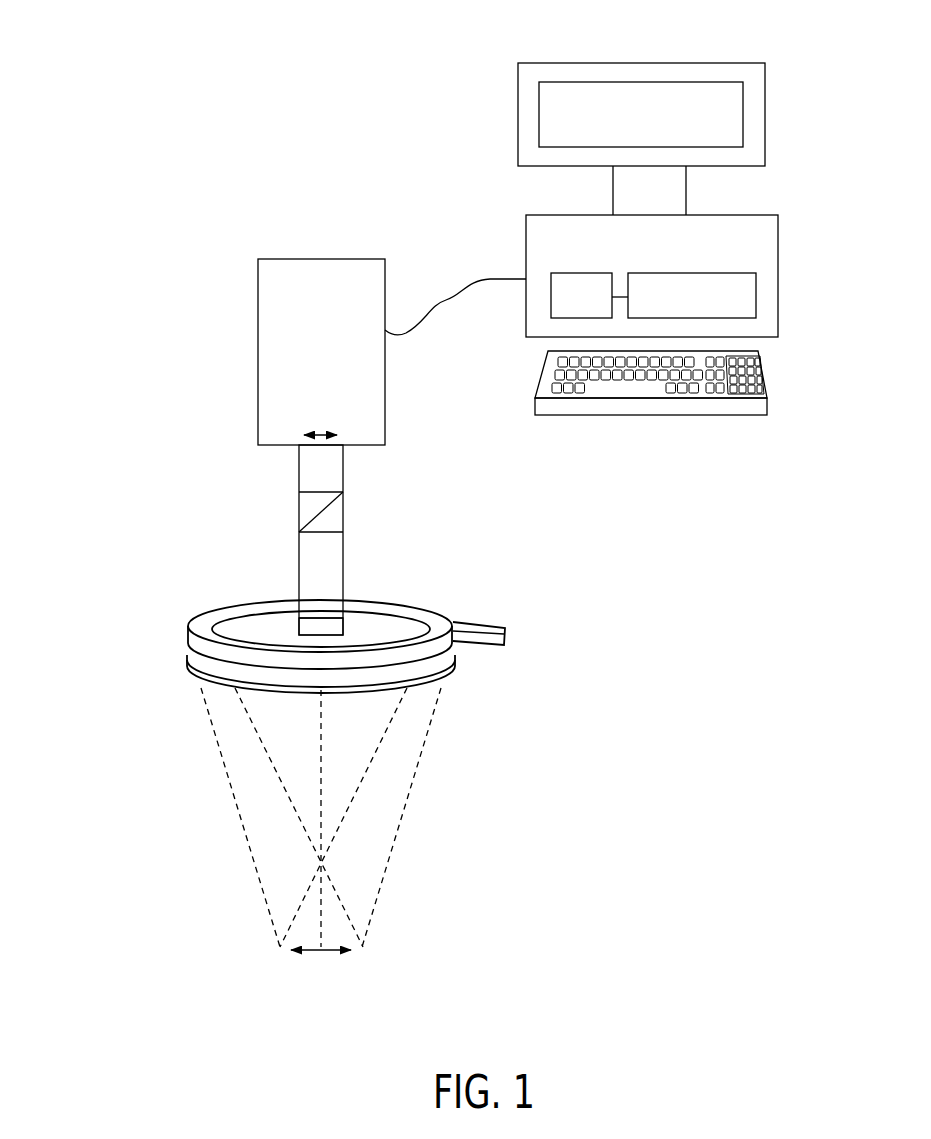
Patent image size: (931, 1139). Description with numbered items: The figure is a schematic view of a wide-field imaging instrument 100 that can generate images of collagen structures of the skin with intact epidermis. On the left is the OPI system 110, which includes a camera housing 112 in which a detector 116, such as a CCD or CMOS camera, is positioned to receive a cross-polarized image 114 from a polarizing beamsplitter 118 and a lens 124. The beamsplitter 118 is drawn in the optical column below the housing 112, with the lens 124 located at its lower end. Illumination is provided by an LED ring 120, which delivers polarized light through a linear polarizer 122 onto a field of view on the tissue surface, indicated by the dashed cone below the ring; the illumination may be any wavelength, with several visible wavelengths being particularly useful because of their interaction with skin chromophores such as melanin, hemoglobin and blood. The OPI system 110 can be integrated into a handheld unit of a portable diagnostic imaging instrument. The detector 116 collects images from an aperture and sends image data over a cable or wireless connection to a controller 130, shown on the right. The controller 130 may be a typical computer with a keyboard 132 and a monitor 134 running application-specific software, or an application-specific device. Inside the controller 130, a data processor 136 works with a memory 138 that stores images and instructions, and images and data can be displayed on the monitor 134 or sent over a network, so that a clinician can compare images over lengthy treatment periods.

The wide-field imaging instrument 100 is at (118, 70).
The OPI system 110 is at (522, 585).
The camera housing 112 is at (243, 316).
The cross-polarized image 114 is at (320, 431).
The detector 116 is at (385, 410).
The polarizing beamsplitter 118 is at (304, 510).
The LED ring 120 is at (192, 624).
The linear polarizer 122 is at (192, 660).
The lens 124 is at (330, 627).
The controller 130 is at (778, 240).
The keyboard 132 is at (758, 382).
The monitor 134 is at (528, 120).
The data processor 136 is at (551, 298).
The memory 138 is at (756, 297).